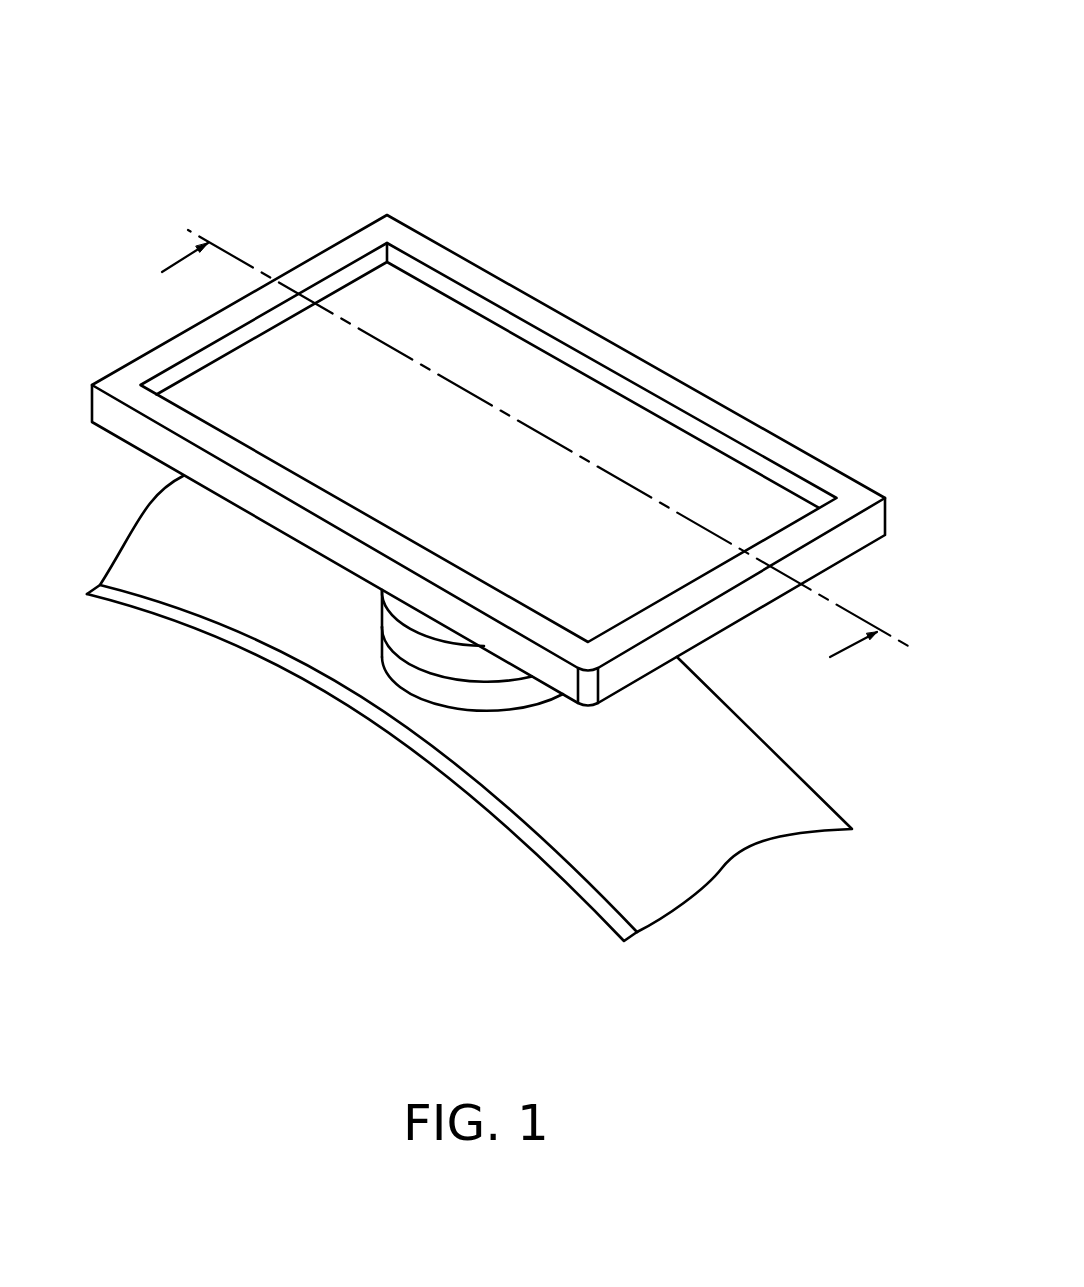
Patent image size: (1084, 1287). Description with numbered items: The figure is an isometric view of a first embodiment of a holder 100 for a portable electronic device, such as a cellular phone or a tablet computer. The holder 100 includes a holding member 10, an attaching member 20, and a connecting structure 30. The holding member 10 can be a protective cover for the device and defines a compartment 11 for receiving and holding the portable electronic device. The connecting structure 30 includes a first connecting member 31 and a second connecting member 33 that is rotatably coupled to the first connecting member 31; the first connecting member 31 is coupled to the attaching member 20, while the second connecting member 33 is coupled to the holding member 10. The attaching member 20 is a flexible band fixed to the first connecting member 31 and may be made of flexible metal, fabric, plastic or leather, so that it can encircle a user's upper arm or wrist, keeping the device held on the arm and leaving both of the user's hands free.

The holder 100 is at (607, 85).
The holding member 10 is at (772, 442).
The compartment 11 is at (648, 435).
The attaching member 20 is at (573, 822).
The connecting structure 30 is at (389, 684).
The first connecting member 31 is at (447, 690).
The second connecting member 33 is at (413, 647).